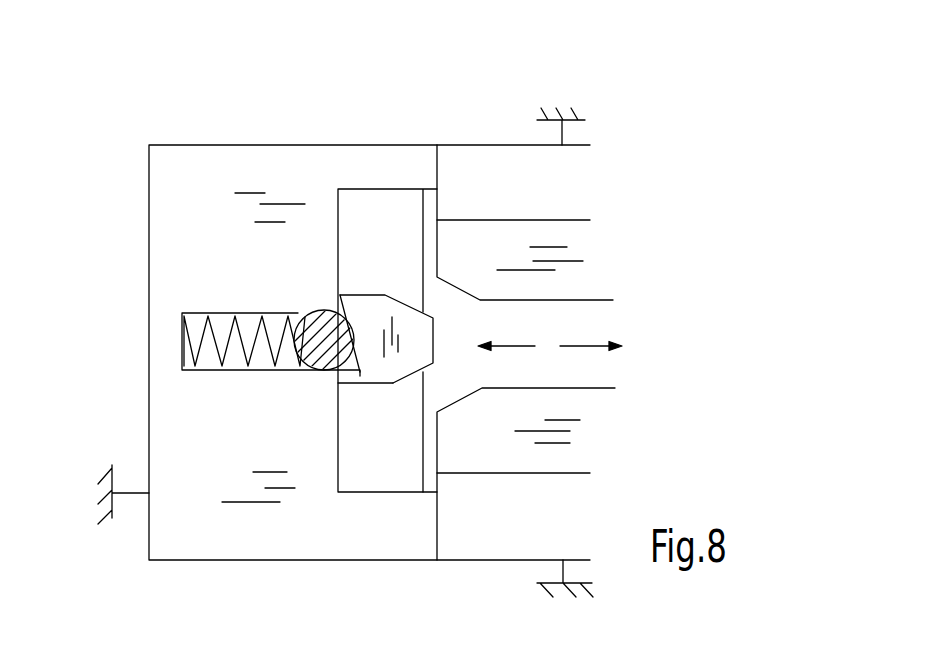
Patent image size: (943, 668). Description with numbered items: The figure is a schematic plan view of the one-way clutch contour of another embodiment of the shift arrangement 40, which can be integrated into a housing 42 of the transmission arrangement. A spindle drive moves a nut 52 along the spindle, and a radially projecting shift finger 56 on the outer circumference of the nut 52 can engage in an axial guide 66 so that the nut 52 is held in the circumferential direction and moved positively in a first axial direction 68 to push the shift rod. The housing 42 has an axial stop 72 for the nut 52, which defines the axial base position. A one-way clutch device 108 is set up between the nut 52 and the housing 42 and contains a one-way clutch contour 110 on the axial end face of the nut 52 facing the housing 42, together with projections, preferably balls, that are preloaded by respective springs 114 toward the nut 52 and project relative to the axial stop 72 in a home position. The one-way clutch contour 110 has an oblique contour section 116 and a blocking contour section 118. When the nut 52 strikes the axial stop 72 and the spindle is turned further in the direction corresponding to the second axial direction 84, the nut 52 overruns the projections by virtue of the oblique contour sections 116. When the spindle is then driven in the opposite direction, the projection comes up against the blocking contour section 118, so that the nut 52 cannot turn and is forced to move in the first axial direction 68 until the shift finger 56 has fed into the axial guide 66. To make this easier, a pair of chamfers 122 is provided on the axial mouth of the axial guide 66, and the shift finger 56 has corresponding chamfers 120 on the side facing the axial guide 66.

The shift arrangement 40 is at (632, 172).
The housing 42 is at (210, 552).
The nut 52 is at (397, 472).
The shift finger 56 is at (372, 373).
The axial guide 66 is at (580, 302).
The first axial direction 68 is at (578, 347).
The axial stop 72 is at (343, 423).
The second axial direction 84 is at (508, 345).
The one-way clutch device 108 is at (313, 262).
The one-way clutch contour 110 is at (337, 205).
The spring 114 is at (180, 335).
The oblique contour section 116 is at (366, 327).
The blocking contour section 118 is at (338, 383).
The chamfer 120 is at (405, 302).
The chamfer 122 is at (452, 397).